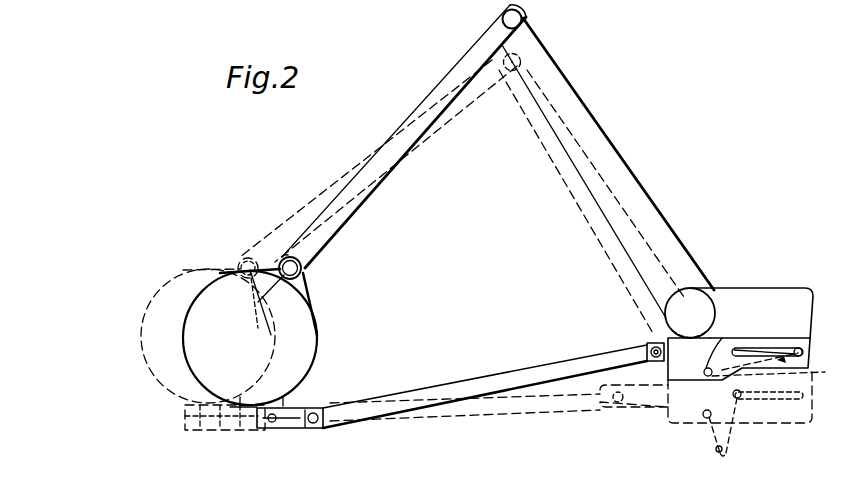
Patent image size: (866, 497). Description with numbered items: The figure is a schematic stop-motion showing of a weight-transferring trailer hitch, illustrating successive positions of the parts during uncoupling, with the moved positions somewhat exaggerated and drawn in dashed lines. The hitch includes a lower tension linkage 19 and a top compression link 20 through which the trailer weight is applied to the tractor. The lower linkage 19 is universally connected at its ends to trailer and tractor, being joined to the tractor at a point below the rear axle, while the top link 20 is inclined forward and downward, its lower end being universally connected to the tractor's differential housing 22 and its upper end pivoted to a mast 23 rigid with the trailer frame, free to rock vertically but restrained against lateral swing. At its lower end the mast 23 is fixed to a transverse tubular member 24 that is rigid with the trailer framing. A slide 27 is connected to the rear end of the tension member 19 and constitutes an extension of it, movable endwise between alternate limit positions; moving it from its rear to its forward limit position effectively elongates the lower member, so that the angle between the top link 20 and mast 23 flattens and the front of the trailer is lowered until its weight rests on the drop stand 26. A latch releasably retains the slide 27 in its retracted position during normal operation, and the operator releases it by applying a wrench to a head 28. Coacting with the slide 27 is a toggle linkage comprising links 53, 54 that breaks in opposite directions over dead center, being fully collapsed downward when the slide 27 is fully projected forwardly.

The lower tension linkage 19 is at (437, 403).
The top compression link 20 is at (383, 138).
The differential housing 22 is at (318, 333).
The mast 23 is at (625, 190).
The transverse tubular member 24 is at (710, 292).
The drop stand 26 is at (818, 263).
The slide 27 is at (646, 341).
The head 28 is at (711, 346).
The toggle link 53 is at (721, 382).
The toggle link 54 is at (780, 369).